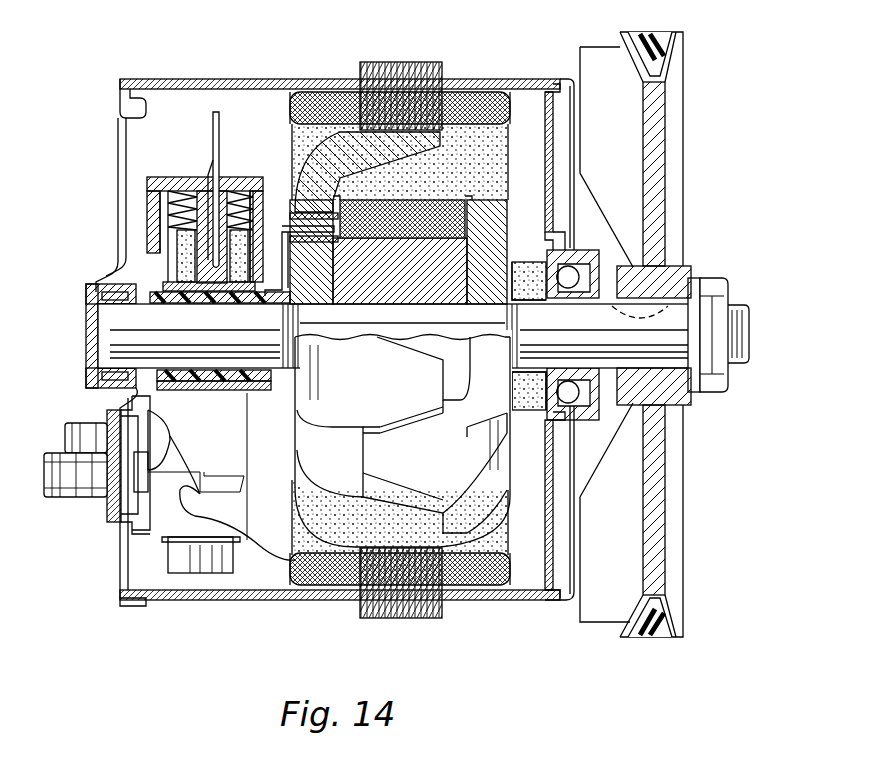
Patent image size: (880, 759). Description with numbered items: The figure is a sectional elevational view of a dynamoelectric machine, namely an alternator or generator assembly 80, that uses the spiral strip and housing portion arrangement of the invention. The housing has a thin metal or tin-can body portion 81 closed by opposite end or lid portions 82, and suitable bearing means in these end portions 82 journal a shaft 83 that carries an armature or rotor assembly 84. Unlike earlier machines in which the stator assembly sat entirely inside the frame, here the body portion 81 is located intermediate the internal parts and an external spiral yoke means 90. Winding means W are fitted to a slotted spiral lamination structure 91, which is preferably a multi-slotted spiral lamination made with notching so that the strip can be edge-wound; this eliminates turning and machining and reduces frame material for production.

The alternator or generator assembly 80 is at (530, 598).
The body portion 81 is at (486, 600).
The end or lid portions 82 is at (555, 520).
The shaft 83 is at (664, 355).
The armature or rotor assembly 84 is at (424, 255).
The spiral yoke means 90 is at (370, 578).
The slotted spiral lamination structure 91 is at (400, 618).
The winding means W is at (318, 95).